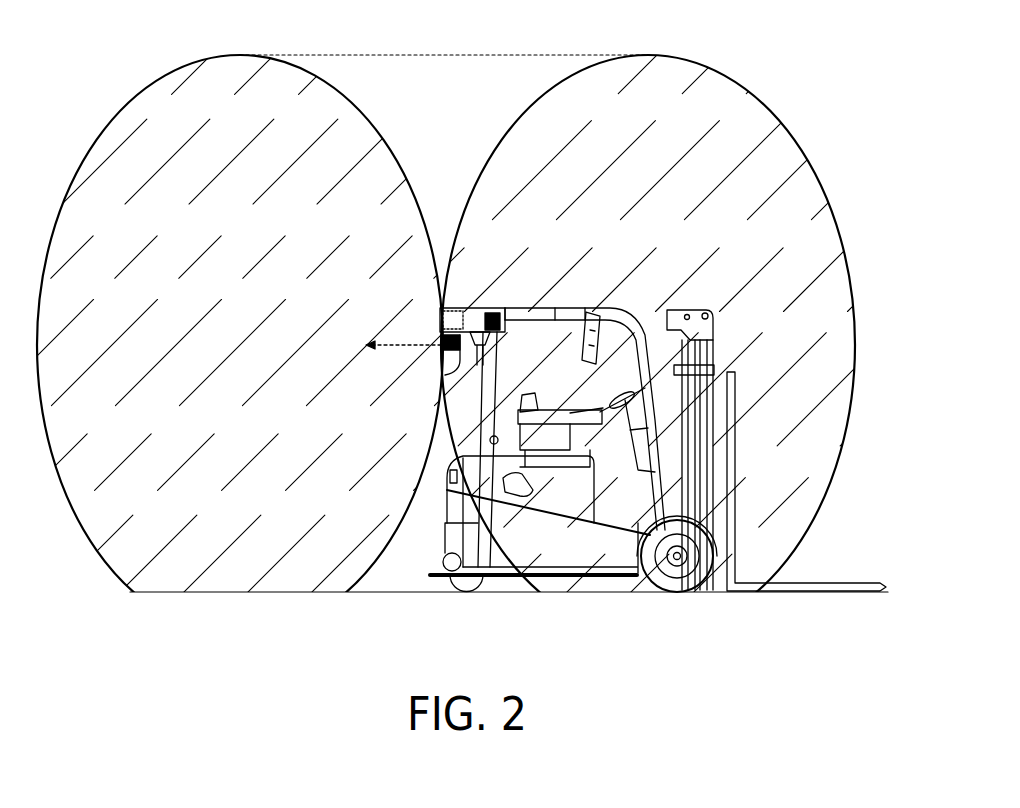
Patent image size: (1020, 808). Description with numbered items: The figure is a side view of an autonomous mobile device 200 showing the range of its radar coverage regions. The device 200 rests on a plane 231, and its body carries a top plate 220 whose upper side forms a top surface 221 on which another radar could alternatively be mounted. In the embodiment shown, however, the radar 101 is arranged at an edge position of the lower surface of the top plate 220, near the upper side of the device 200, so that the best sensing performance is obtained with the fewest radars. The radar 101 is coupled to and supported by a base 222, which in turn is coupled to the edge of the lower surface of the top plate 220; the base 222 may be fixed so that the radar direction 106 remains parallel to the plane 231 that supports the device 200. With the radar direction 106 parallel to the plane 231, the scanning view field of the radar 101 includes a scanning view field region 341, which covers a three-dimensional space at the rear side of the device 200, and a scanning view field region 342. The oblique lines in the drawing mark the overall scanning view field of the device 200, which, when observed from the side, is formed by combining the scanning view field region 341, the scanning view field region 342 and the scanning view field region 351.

The scanning view field region 341 is at (213, 73).
The scanning view field region 342 is at (680, 60).
The scanning view field region 351 is at (423, 72).
The plane 231 is at (393, 594).
The autonomous mobile device 200 is at (570, 383).
The top plate 220 is at (437, 317).
The top surface 221 is at (460, 302).
The radar 101 is at (442, 340).
The radar direction 106 is at (382, 350).
The base 222 is at (440, 374).